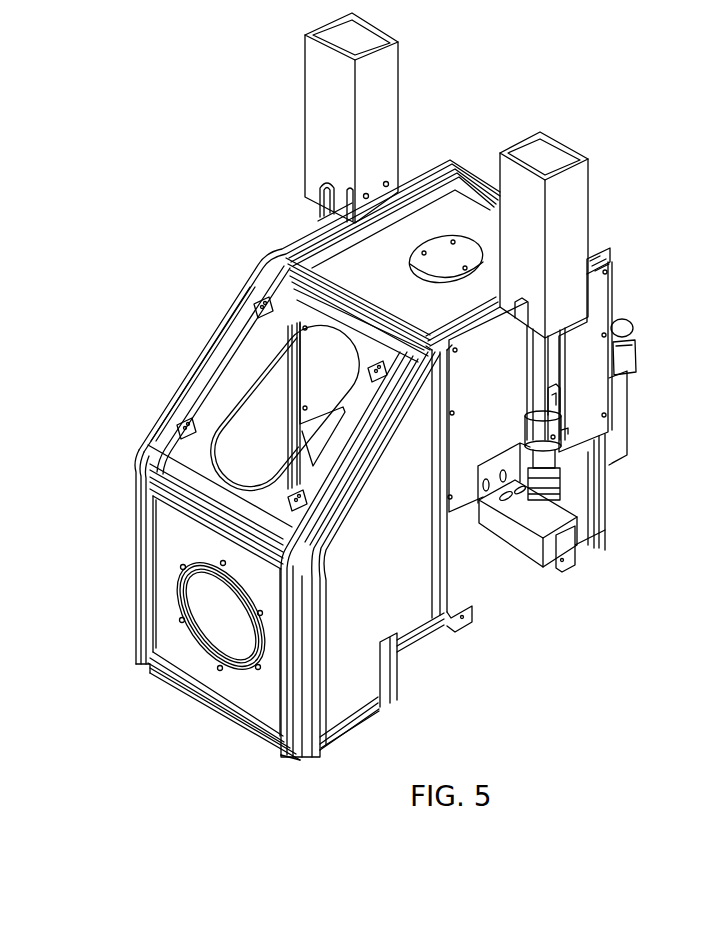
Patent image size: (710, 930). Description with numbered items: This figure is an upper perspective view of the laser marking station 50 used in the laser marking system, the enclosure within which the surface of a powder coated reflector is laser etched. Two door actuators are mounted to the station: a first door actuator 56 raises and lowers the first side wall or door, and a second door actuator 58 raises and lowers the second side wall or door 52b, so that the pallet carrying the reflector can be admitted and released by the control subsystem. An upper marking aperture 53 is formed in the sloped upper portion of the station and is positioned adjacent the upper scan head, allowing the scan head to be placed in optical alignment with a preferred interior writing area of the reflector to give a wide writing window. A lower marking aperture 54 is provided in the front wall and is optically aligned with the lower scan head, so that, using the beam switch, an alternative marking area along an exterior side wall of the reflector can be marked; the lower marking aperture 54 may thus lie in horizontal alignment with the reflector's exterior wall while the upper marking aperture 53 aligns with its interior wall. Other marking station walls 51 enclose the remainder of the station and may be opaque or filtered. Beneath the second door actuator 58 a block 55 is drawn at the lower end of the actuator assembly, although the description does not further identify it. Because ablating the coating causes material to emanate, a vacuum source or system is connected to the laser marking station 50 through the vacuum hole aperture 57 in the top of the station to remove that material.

The laser marking station 50 is at (180, 222).
The marking station walls 51 is at (393, 600).
The second side wall or door 52b is at (611, 308).
The upper marking aperture 53 is at (229, 404).
The lower marking aperture 54 is at (243, 617).
The actuator block 55 is at (523, 537).
The first door actuator 56 is at (390, 75).
The vacuum hole aperture 57 is at (443, 246).
The second door actuator 58 is at (565, 198).